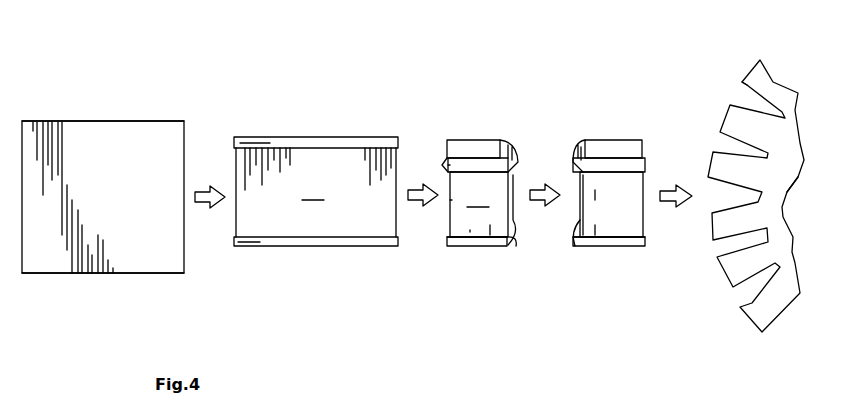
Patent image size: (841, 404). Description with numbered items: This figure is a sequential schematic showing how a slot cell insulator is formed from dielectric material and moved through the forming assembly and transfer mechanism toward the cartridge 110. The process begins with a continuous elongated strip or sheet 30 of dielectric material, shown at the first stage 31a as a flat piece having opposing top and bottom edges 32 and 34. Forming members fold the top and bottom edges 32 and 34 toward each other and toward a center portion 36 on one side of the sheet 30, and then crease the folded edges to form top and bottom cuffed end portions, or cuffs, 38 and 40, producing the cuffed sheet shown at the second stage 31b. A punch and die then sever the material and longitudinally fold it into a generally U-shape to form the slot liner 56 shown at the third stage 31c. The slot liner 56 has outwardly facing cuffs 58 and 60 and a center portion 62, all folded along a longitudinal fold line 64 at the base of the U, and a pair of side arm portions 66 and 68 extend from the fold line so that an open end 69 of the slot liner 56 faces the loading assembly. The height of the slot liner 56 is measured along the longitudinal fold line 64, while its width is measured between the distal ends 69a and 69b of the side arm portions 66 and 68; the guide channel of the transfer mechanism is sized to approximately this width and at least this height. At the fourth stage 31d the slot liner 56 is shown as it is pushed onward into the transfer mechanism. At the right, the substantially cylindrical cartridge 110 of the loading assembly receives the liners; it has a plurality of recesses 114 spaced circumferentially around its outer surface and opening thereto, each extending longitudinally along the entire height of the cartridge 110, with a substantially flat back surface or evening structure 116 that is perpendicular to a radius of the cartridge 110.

The sheet 30 is at (113, 145).
The top edge 32 is at (143, 121).
The bottom edge 34 is at (138, 273).
The stage 31a is at (252, 212).
The center portion 36 is at (316, 192).
The top cuffed end portion 38 is at (330, 143).
The bottom cuffed end portion 40 is at (320, 246).
The stage 31b is at (316, 223).
The center portion 62 is at (483, 208).
The side arm portion 66 is at (460, 140).
The cuff 60 is at (484, 150).
The longitudinal fold line 64 is at (512, 185).
The cuff 58 is at (490, 244).
The open end 69 is at (434, 164).
The distal end 69a is at (445, 158).
The distal end 69b is at (448, 200).
The slot liner 56 is at (470, 290).
The stage 31c is at (532, 224).
The side arm portion 68 is at (618, 140).
The stage 31d is at (609, 234).
The cartridge 110 is at (773, 74).
The recess 114 is at (752, 102).
The evening structure 116 is at (796, 172).